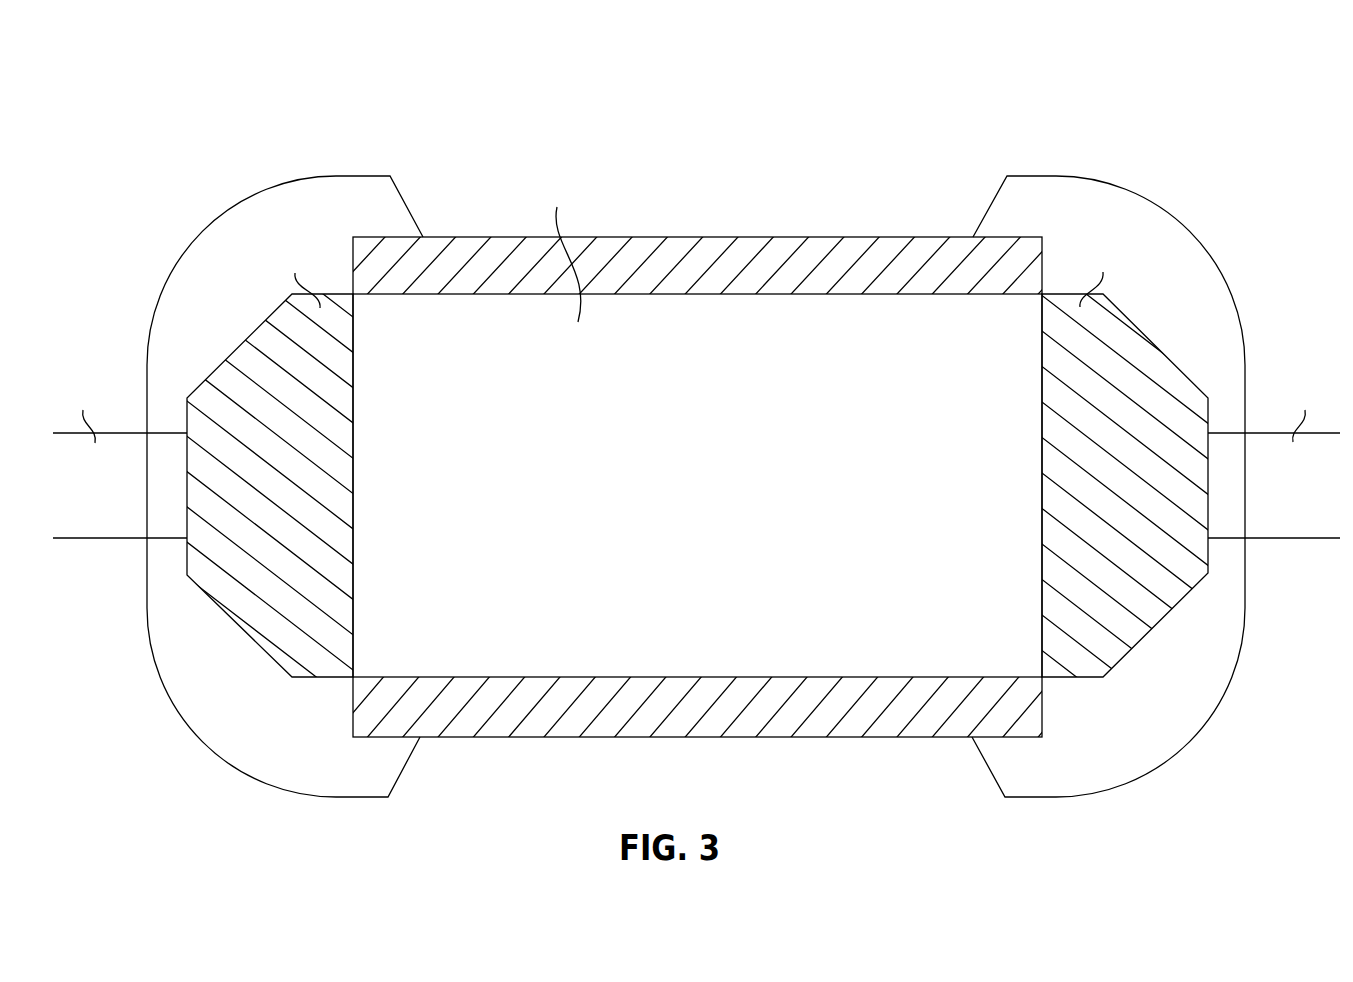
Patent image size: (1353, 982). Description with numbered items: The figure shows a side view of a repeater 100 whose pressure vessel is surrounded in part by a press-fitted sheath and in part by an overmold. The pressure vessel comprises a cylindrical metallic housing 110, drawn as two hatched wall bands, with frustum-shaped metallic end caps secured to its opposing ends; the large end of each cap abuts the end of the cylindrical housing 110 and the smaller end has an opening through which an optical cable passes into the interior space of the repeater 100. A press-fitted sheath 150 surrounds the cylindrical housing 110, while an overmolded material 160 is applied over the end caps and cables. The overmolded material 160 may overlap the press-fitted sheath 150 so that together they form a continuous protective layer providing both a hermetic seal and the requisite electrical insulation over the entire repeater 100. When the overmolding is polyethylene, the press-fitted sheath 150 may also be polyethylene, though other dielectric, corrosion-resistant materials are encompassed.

The repeater 100 is at (408, 122).
The cylindrical metallic housing 110 is at (887, 317).
The press-fitted sheath 150 is at (755, 253).
The overmolded material 160 is at (262, 203).